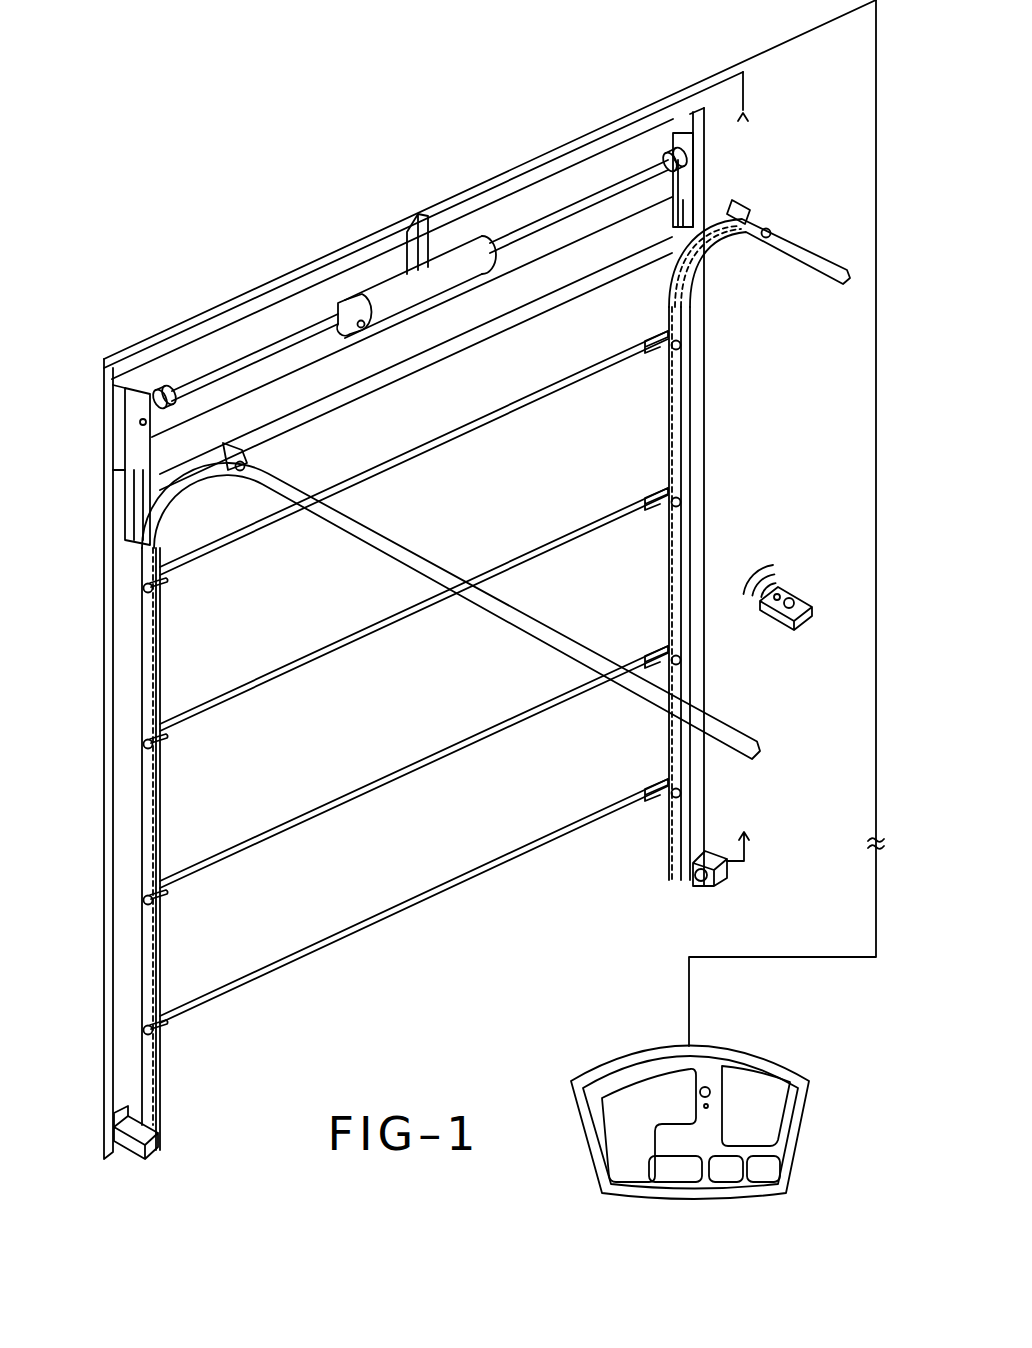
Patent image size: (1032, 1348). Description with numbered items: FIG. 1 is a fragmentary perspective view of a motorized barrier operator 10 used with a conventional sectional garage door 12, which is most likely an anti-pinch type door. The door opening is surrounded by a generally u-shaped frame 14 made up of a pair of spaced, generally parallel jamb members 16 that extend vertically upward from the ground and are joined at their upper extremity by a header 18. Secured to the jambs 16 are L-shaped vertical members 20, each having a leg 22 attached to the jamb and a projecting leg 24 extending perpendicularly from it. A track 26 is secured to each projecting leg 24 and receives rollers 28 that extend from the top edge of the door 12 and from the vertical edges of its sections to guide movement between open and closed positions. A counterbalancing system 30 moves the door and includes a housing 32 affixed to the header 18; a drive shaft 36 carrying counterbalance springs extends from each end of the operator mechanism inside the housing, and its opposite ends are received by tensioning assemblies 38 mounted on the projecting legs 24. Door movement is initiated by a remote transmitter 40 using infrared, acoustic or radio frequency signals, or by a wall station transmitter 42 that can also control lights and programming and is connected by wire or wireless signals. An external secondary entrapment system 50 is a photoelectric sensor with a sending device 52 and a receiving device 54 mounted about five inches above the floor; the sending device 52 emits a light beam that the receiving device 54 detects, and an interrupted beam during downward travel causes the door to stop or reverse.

The motorized barrier operator 10 is at (276, 152).
The sectional garage door 12 is at (626, 469).
The frame 14 is at (230, 308).
The jamb members 16 is at (125, 985).
The header 18 is at (195, 350).
The L-shaped vertical members 20 is at (133, 438).
The leg 22 is at (124, 396).
The projecting leg 24 is at (142, 457).
The track 26 is at (487, 612).
The roller 28 is at (235, 478).
The counterbalancing system 30 is at (368, 265).
The housing 32 is at (447, 257).
The drive shaft 36 is at (303, 330).
The tensioning assemblies 38 is at (160, 392).
The remote transmitter 40 is at (803, 590).
The wall station transmitter 42 is at (840, 1080).
The external secondary entrapment system 50 is at (650, 904).
The sending device 52 is at (716, 882).
The receiving device 54 is at (152, 1147).